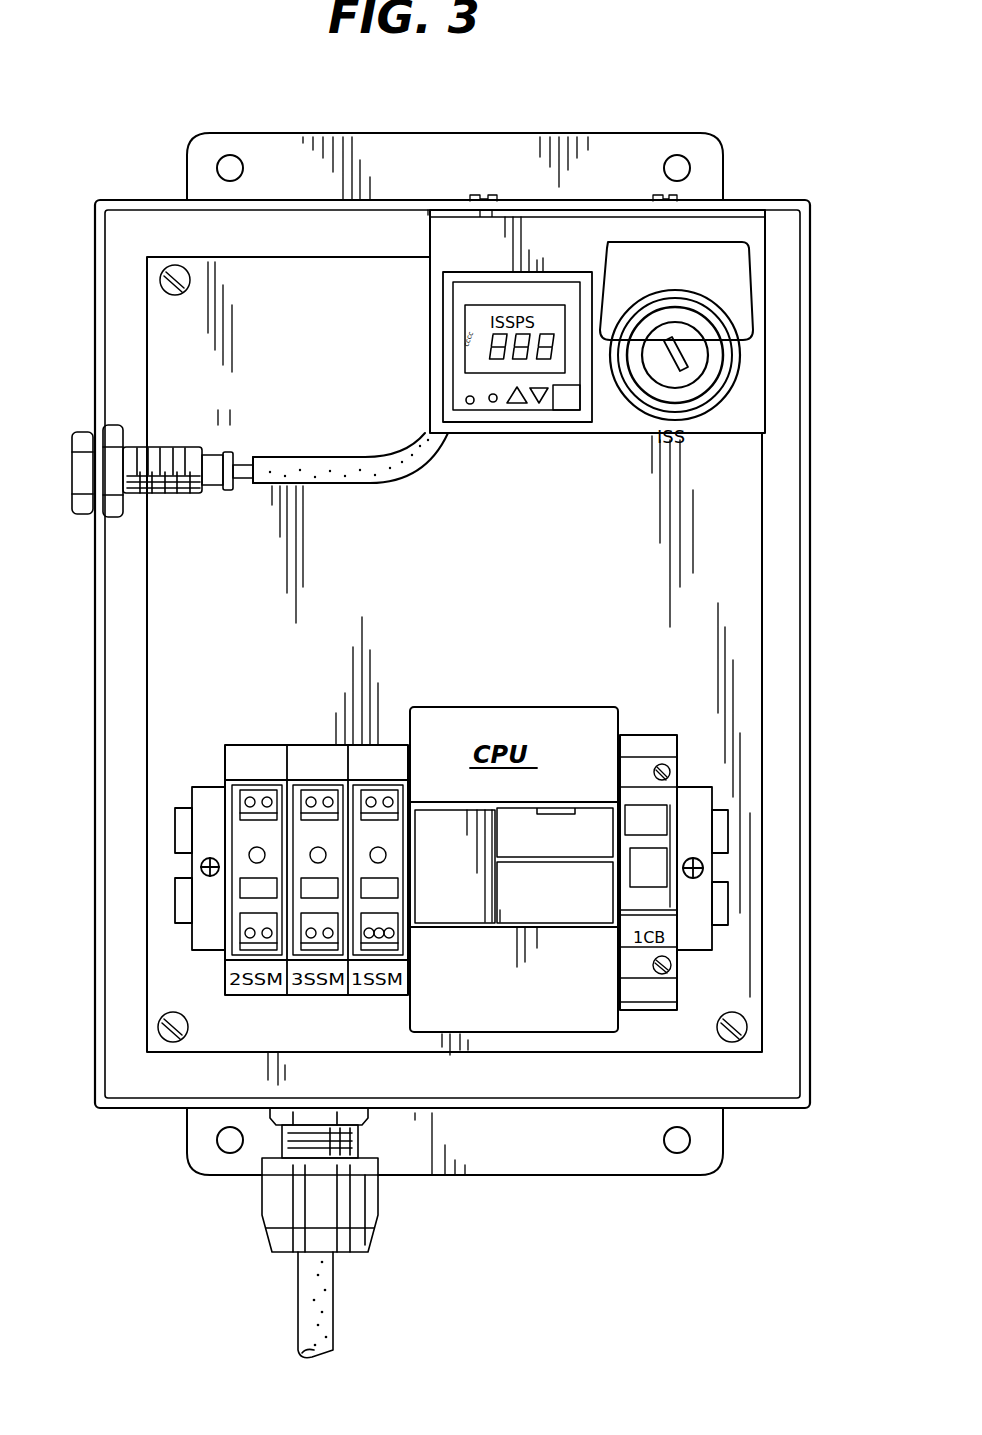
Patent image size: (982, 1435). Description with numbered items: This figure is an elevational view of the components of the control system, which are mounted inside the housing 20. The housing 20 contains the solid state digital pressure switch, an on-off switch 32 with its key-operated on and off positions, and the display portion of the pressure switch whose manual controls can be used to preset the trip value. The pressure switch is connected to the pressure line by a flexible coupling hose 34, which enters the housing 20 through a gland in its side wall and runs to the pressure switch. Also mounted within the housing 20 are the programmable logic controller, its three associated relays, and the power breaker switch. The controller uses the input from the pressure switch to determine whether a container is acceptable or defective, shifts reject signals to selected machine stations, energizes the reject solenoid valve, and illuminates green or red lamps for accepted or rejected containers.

The housing 20 is at (158, 1132).
The on-off switch 32 is at (713, 253).
The flexible coupling hose 34 is at (413, 480).